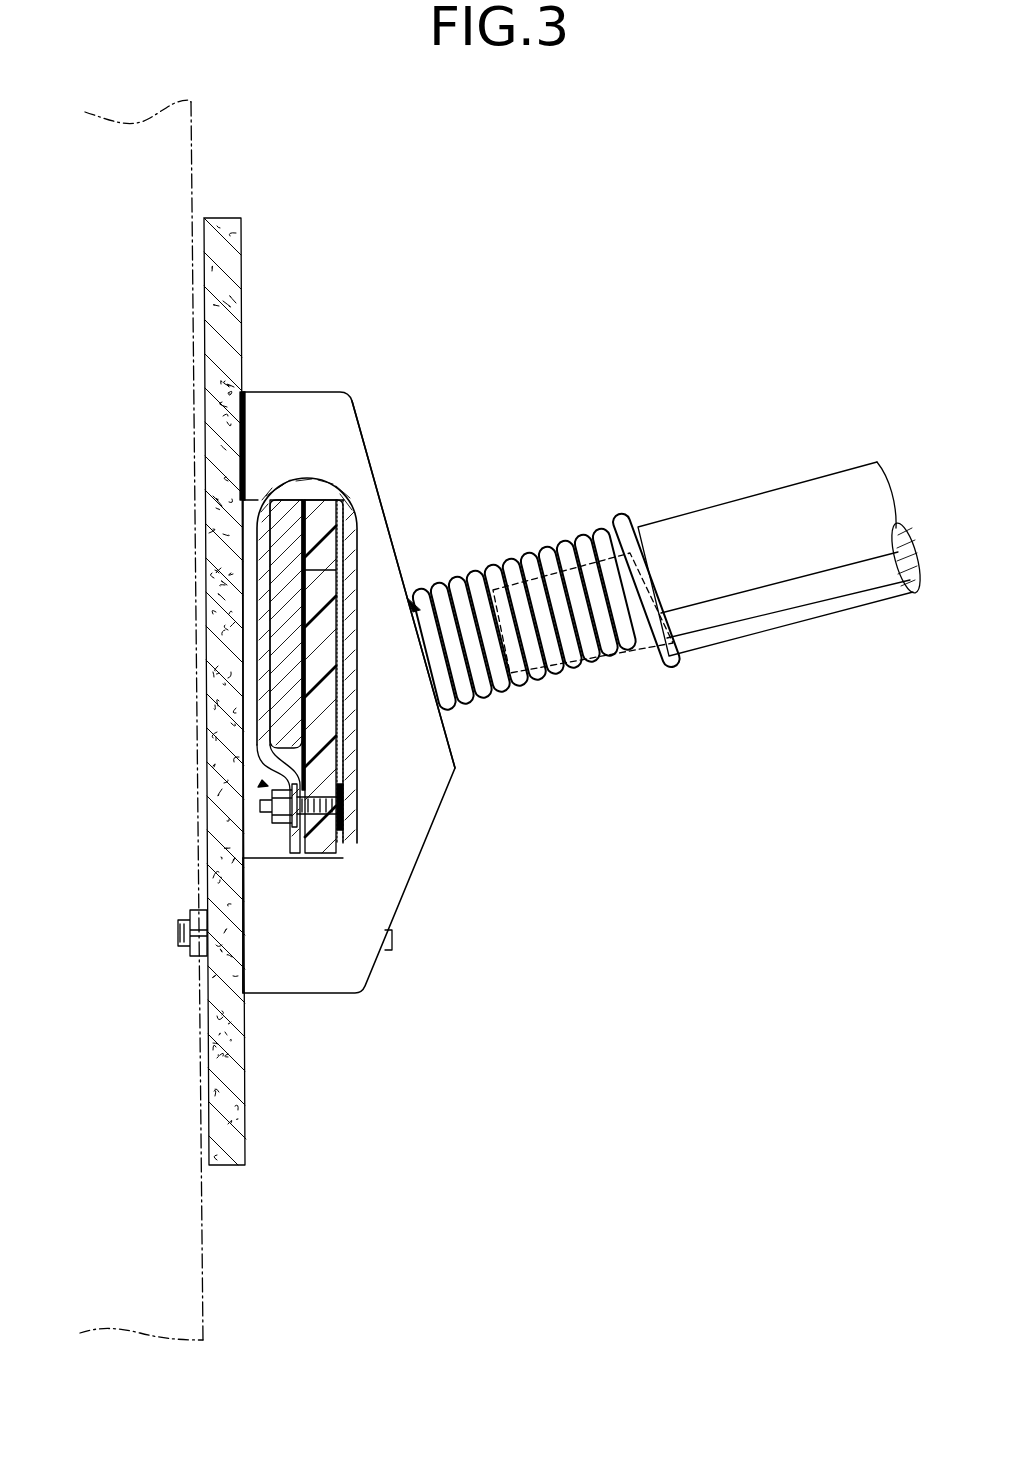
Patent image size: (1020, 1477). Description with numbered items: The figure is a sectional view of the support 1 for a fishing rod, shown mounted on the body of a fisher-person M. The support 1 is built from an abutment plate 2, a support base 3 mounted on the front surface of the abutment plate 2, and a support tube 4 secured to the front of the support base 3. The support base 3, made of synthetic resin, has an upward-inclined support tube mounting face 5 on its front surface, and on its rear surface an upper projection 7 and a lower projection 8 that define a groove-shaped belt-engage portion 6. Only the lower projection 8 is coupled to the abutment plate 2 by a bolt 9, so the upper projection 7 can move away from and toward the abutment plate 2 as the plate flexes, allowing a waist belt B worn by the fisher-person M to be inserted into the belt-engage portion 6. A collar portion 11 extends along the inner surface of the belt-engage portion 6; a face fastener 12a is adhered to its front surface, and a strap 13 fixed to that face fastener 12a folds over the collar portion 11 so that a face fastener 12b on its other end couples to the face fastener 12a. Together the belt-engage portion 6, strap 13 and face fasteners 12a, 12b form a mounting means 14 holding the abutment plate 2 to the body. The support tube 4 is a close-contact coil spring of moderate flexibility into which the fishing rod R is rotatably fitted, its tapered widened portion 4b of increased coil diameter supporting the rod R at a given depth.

The support 1 is at (406, 673).
The abutment plate 2 is at (236, 292).
The support base 3 is at (297, 405).
The support tube 4 is at (547, 567).
The widened portion 4b is at (667, 670).
The support tube mounting face 5 is at (376, 470).
The belt-engage portion 6 is at (304, 517).
The upper projection 7 is at (262, 430).
The lower projection 8 is at (277, 903).
The bolt 9 is at (178, 935).
The collar portion 11 is at (325, 725).
The face fastener 12a is at (283, 560).
The face fastener 12b is at (350, 588).
The strap 13 is at (348, 802).
The mounting means 14 is at (265, 783).
The waist belt B is at (308, 647).
The fisher-person M is at (193, 151).
The fishing rod R is at (763, 503).